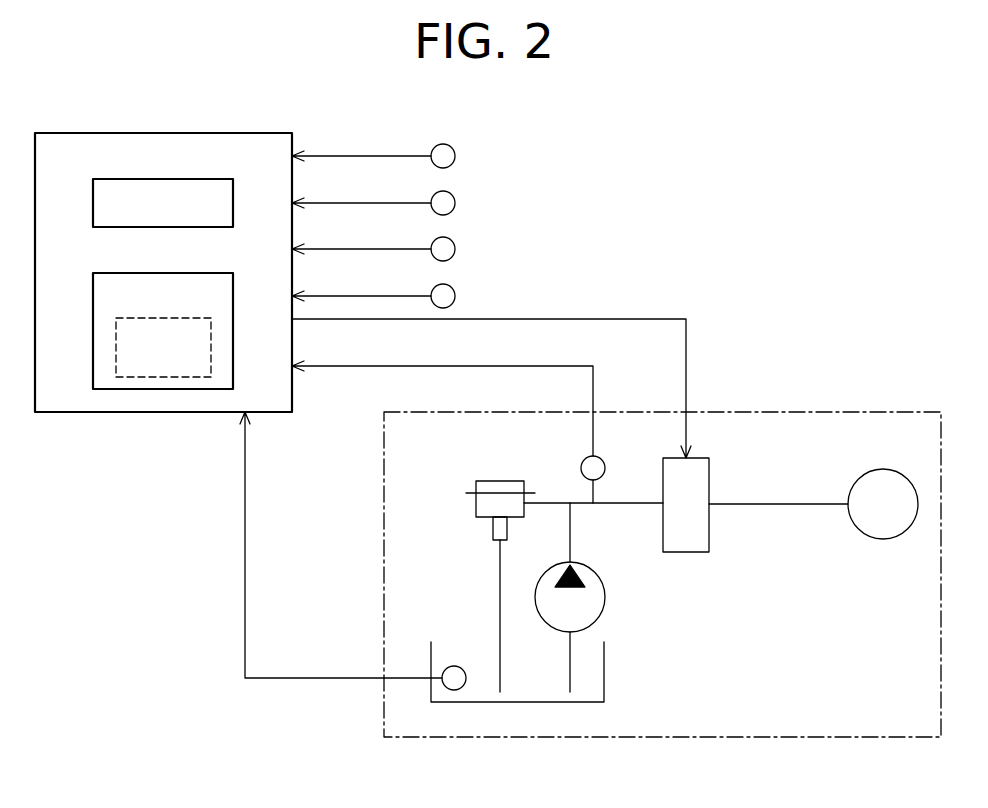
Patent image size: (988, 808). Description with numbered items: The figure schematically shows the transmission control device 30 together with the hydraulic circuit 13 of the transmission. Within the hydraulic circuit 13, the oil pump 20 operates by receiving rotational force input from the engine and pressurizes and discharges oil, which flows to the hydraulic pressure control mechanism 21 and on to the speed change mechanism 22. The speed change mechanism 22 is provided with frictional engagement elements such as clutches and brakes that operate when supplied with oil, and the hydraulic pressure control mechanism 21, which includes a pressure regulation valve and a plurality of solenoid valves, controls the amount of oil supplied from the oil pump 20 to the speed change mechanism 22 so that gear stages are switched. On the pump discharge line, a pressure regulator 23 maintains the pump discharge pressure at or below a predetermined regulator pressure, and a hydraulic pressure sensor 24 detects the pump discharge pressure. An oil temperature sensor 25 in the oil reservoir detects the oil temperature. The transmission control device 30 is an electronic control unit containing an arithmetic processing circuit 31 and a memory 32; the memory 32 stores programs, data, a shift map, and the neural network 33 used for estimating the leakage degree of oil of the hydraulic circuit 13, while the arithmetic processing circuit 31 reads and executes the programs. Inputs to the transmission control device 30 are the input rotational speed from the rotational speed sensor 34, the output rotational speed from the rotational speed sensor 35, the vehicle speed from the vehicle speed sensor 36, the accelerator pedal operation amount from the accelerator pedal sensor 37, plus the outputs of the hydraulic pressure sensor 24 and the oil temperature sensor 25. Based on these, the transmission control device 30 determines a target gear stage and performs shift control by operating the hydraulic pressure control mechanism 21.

The hydraulic circuit 13 is at (847, 412).
The oil pump 20 is at (605, 597).
The hydraulic pressure control mechanism 21 is at (709, 530).
The speed change mechanism 22 is at (883, 539).
The pressure regulator 23 is at (475, 497).
The hydraulic pressure sensor 24 is at (581, 467).
The oil temperature sensor 25 is at (454, 666).
The transmission control device 30 is at (220, 133).
The arithmetic processing circuit 31 is at (203, 179).
The memory 32 is at (200, 273).
The neural network 33 is at (211, 347).
The rotational speed sensor 34 is at (455, 156).
The rotational speed sensor 35 is at (455, 203).
The vehicle speed sensor 36 is at (455, 249).
The accelerator pedal sensor 37 is at (455, 296).